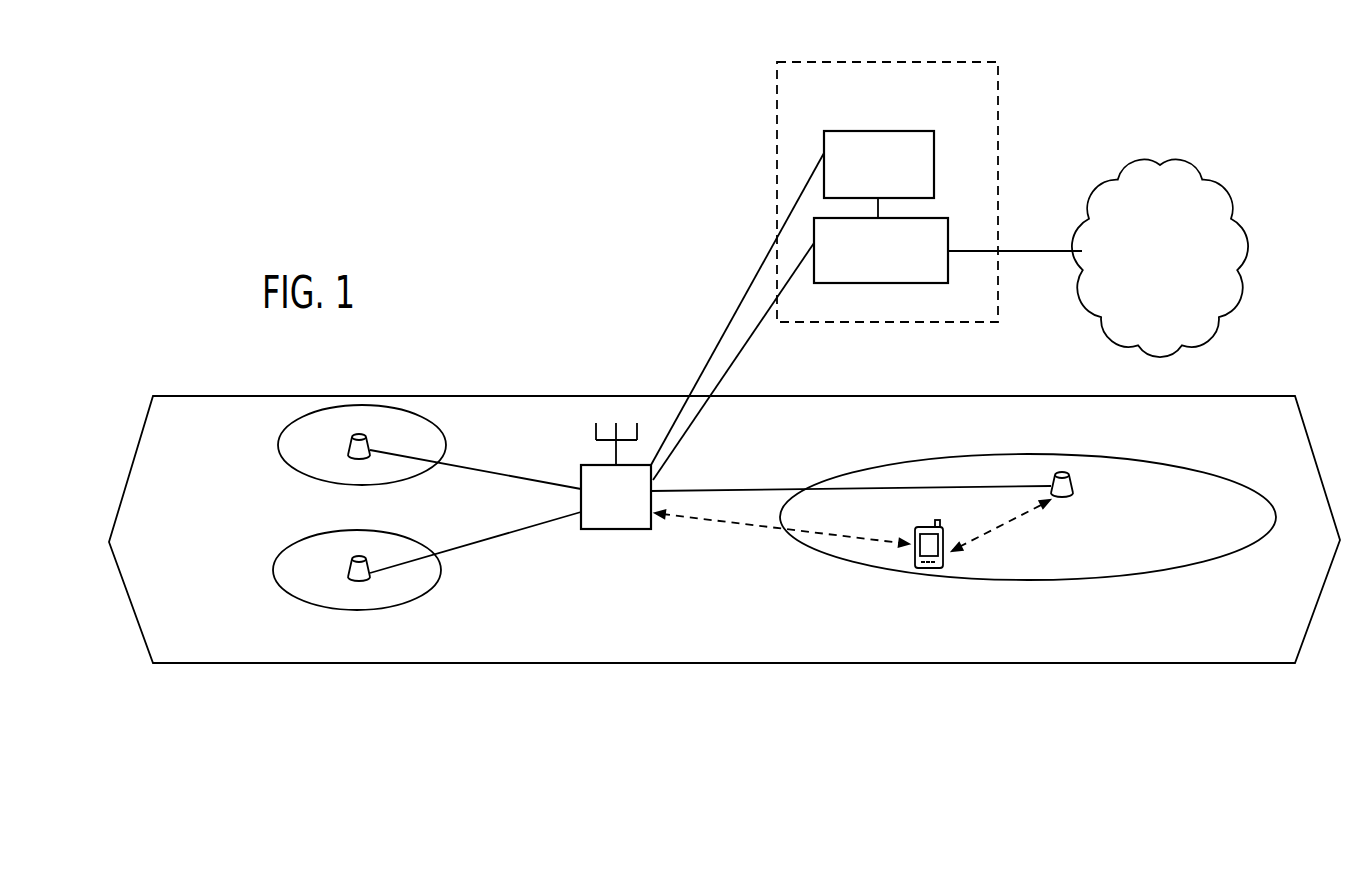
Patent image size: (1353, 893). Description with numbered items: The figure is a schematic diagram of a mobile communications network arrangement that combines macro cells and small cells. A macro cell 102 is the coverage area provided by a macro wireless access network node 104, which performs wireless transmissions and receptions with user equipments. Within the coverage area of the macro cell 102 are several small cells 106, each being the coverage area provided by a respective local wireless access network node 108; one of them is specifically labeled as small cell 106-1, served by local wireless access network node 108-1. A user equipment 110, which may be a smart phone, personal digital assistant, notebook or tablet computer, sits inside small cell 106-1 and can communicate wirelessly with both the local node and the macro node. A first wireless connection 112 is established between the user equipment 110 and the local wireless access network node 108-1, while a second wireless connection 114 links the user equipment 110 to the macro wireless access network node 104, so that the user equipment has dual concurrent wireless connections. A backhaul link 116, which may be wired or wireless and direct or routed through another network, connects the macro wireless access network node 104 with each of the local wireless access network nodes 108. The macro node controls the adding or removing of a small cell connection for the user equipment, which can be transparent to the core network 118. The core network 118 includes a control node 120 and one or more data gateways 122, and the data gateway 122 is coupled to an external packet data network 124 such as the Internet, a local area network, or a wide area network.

The macro cell 102 is at (938, 396).
The macro wireless access network node 104 is at (616, 529).
The small cell 106 is at (277, 445).
The small cell 106-1 is at (1162, 460).
The local wireless access network node 108 is at (347, 448).
The local wireless access network node 108-1 is at (1068, 477).
The user equipment 110 is at (915, 558).
The first wireless connection 112 is at (1003, 527).
The second wireless connection 114 is at (745, 527).
The backhaul link 116 is at (493, 473).
The core network 118 is at (888, 62).
The control node 120 is at (935, 165).
The data gateway 122 is at (950, 237).
The external packet data network 124 is at (1167, 162).